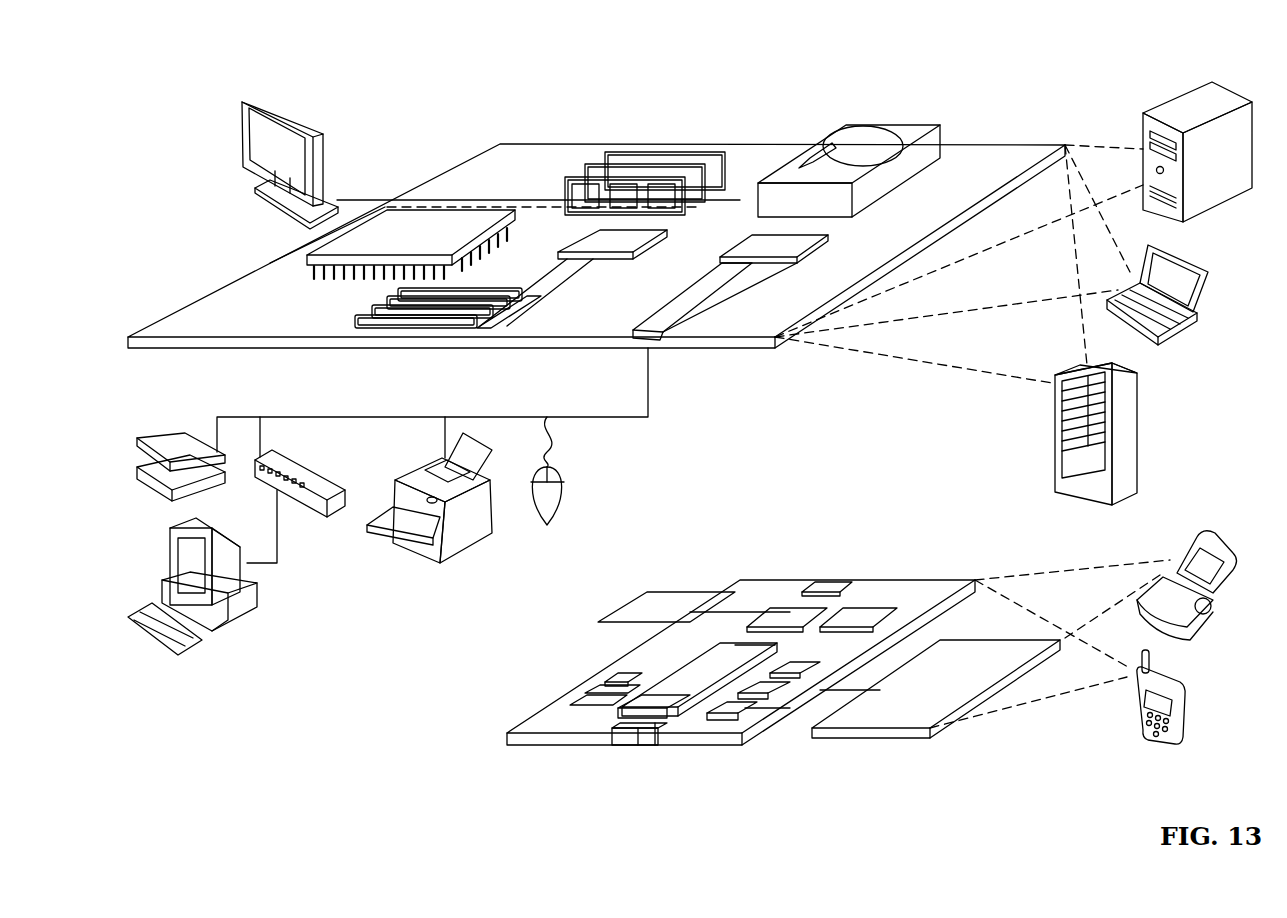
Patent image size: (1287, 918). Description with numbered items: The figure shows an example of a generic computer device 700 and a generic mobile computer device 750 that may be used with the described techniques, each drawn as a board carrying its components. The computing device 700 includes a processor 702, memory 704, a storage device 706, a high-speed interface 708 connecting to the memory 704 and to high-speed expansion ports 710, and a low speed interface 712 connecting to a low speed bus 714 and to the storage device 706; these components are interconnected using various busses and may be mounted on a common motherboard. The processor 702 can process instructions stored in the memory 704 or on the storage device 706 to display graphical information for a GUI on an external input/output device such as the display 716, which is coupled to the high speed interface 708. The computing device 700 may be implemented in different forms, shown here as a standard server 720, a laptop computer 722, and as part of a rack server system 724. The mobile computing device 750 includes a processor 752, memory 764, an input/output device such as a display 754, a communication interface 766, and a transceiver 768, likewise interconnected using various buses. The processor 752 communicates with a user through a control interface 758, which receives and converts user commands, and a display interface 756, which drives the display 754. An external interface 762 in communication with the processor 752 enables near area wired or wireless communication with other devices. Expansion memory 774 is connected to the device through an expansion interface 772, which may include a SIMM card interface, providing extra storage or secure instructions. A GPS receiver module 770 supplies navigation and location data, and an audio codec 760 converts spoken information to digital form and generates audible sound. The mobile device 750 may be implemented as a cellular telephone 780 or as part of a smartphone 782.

The generic computer device 700 is at (425, 112).
The processor 702 is at (300, 256).
The memory 704 is at (622, 152).
The storage device 706 is at (846, 133).
The high-speed interface 708 is at (585, 240).
The high-speed expansion ports 710 is at (355, 322).
The low speed interface 712 is at (752, 240).
The low speed bus 714 is at (657, 338).
The display 716 is at (244, 100).
The standard server 720 is at (1142, 130).
The laptop computer 722 is at (1208, 272).
The rack server system 724 is at (1056, 455).
The generic mobile computer device 750 is at (478, 745).
The processor 752 is at (672, 703).
The display 754 is at (897, 718).
The display interface 756 is at (745, 714).
The control interface 758 is at (783, 700).
The audio codec 760 is at (798, 676).
The external interface 762 is at (638, 741).
The memory 764 is at (583, 693).
The communication interface 766 is at (787, 613).
The transceiver 768 is at (860, 613).
The GPS receiver module 770 is at (837, 584).
The expansion interface 772 is at (717, 592).
The expansion memory 774 is at (647, 592).
The cellular telephone 780 is at (1190, 540).
The smartphone 782 is at (1133, 705).